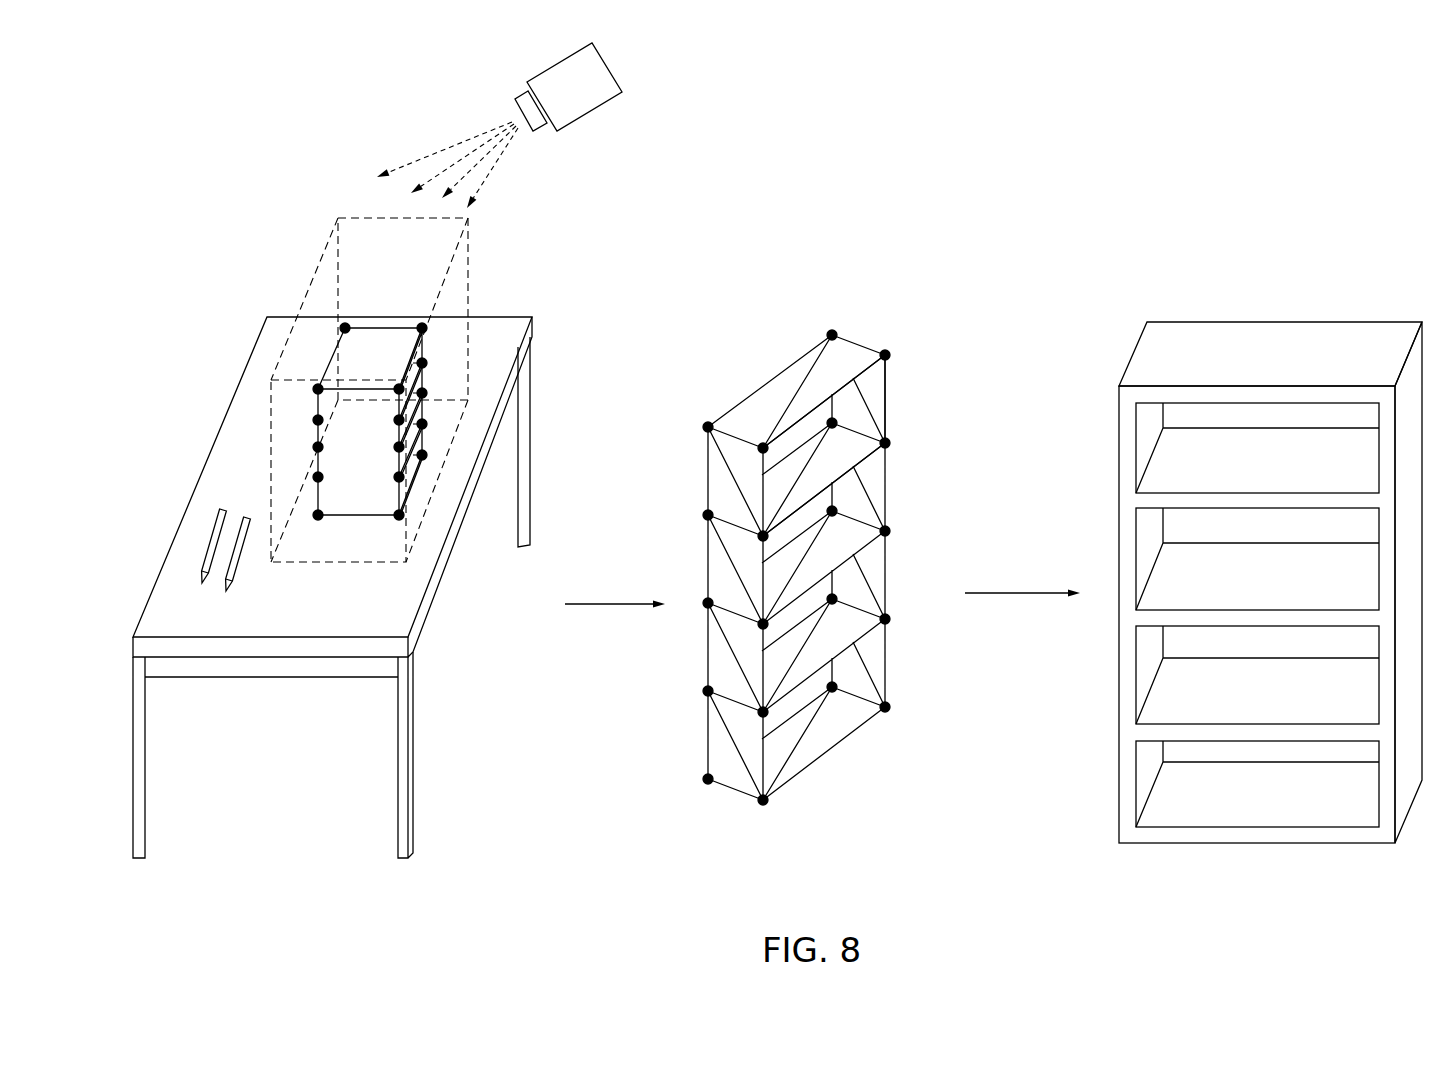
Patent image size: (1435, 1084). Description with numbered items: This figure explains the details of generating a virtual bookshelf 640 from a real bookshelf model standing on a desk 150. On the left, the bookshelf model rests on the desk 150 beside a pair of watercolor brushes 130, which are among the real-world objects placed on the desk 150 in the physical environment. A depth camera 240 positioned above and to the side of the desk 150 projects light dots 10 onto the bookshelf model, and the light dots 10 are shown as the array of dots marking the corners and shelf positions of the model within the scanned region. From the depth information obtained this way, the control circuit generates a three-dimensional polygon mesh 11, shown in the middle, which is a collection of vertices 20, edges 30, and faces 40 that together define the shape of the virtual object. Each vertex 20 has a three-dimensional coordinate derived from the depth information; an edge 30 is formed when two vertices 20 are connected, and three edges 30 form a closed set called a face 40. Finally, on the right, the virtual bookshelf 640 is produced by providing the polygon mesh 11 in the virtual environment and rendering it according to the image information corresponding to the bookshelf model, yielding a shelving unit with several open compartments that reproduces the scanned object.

The light dots 10 is at (317, 420).
The polygon mesh 11 is at (818, 528).
The vertices 20 is at (885, 355).
The edges 30 is at (812, 352).
The faces 40 is at (878, 402).
The watercolor brushes 130 is at (205, 553).
The desk 150 is at (407, 737).
The depth camera 240 is at (588, 100).
The virtual bookshelf 640 is at (1272, 332).